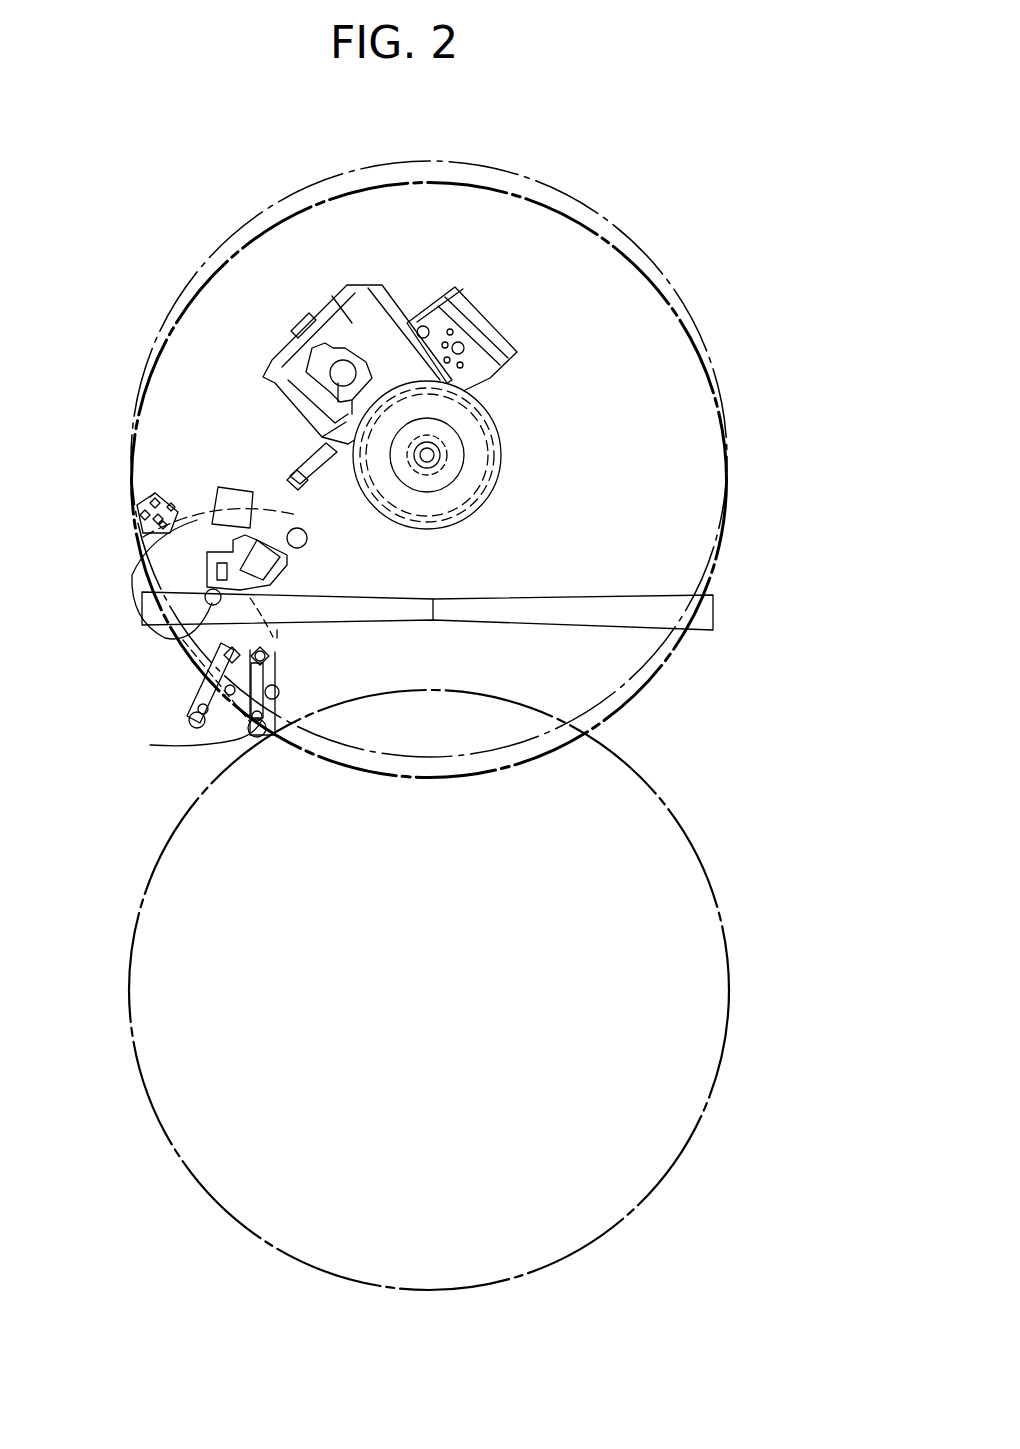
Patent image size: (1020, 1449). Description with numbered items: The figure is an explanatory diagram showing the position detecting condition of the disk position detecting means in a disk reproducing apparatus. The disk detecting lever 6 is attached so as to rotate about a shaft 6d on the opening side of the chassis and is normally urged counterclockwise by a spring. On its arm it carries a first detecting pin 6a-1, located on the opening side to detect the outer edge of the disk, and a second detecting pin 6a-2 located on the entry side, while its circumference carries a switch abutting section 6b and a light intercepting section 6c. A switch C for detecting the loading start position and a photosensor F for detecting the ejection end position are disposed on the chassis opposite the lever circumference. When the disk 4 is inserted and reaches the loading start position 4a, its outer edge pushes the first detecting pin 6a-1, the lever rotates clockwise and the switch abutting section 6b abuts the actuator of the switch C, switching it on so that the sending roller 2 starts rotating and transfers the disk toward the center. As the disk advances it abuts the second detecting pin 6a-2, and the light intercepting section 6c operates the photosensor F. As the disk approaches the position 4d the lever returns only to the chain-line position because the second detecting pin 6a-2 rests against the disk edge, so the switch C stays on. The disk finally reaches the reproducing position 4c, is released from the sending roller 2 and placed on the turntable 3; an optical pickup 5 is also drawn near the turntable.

The sending roller 2 is at (632, 596).
The turntable 3 is at (502, 452).
The disk 4 is at (645, 1236).
The loading start position 4a is at (668, 798).
The reproducing position 4c is at (560, 188).
The disk position 4d is at (642, 268).
The optical pickup 5 is at (332, 296).
The disk detecting lever 6 is at (133, 599).
The first detecting pin 6a-1 is at (195, 728).
The second detecting pin 6a-2 is at (275, 690).
The switch abutting section 6b is at (168, 538).
The light intercepting section 6c is at (236, 490).
The shaft 6d is at (210, 606).
The switch C is at (150, 497).
The photosensor F is at (308, 540).